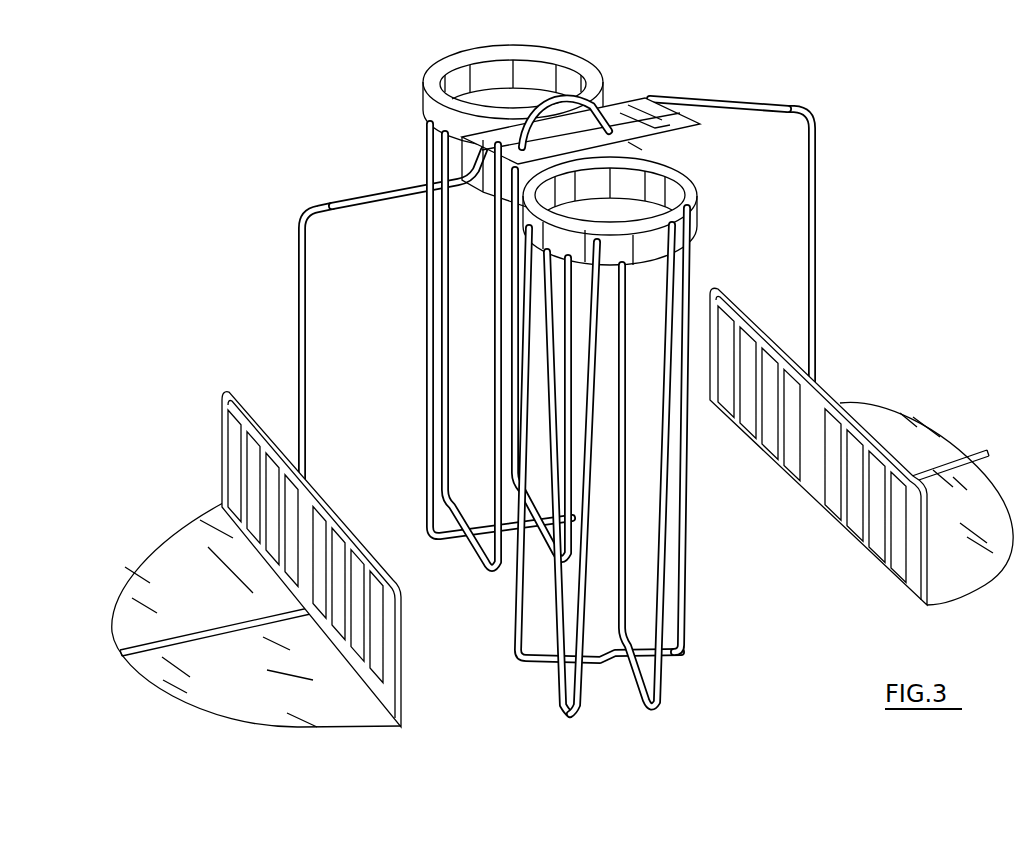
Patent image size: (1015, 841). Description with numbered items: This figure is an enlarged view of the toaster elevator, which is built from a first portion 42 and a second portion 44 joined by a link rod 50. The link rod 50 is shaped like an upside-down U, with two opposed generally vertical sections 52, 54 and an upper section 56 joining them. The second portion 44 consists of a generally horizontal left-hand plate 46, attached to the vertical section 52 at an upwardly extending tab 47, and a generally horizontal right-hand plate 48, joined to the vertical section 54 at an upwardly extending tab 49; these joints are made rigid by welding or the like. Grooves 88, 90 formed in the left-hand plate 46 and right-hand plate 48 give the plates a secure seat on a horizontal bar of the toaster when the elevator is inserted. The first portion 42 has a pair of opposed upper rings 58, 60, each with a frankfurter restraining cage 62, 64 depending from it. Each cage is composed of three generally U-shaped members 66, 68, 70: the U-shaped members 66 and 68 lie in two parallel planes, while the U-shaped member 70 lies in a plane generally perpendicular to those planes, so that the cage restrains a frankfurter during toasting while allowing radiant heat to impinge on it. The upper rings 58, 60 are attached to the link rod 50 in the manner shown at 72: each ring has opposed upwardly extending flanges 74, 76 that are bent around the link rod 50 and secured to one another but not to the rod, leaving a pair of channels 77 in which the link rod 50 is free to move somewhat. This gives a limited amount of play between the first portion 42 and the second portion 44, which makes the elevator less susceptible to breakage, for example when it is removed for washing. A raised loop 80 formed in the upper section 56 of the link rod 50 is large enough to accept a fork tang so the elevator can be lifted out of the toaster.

The first portion 42 is at (553, 445).
The second portion 44 is at (286, 555).
The left-hand plate 46 is at (256, 601).
The upwardly extending tab 47 is at (240, 396).
The right-hand plate 48 is at (861, 471).
The upwardly extending tab 49 is at (752, 318).
The link rod 50 is at (566, 283).
The generally vertical section 52 is at (299, 278).
The generally vertical section 54 is at (815, 187).
The upper section 56 is at (370, 182).
The upper ring 58 is at (548, 55).
The upper ring 60 is at (693, 183).
The frankfurter restraining cage 62 is at (427, 542).
The frankfurter restraining cage 64 is at (550, 673).
The U-shaped member 66 is at (667, 707).
The U-shaped member 68 is at (580, 707).
The U-shaped member 70 is at (681, 653).
The attachment of upper rings to link rod 72 is at (586, 137).
The flange 74 is at (650, 132).
The flange 76 is at (647, 100).
The channels 77 is at (630, 145).
The raised loop 80 is at (588, 102).
The groove 88 is at (213, 633).
The groove 90 is at (980, 457).